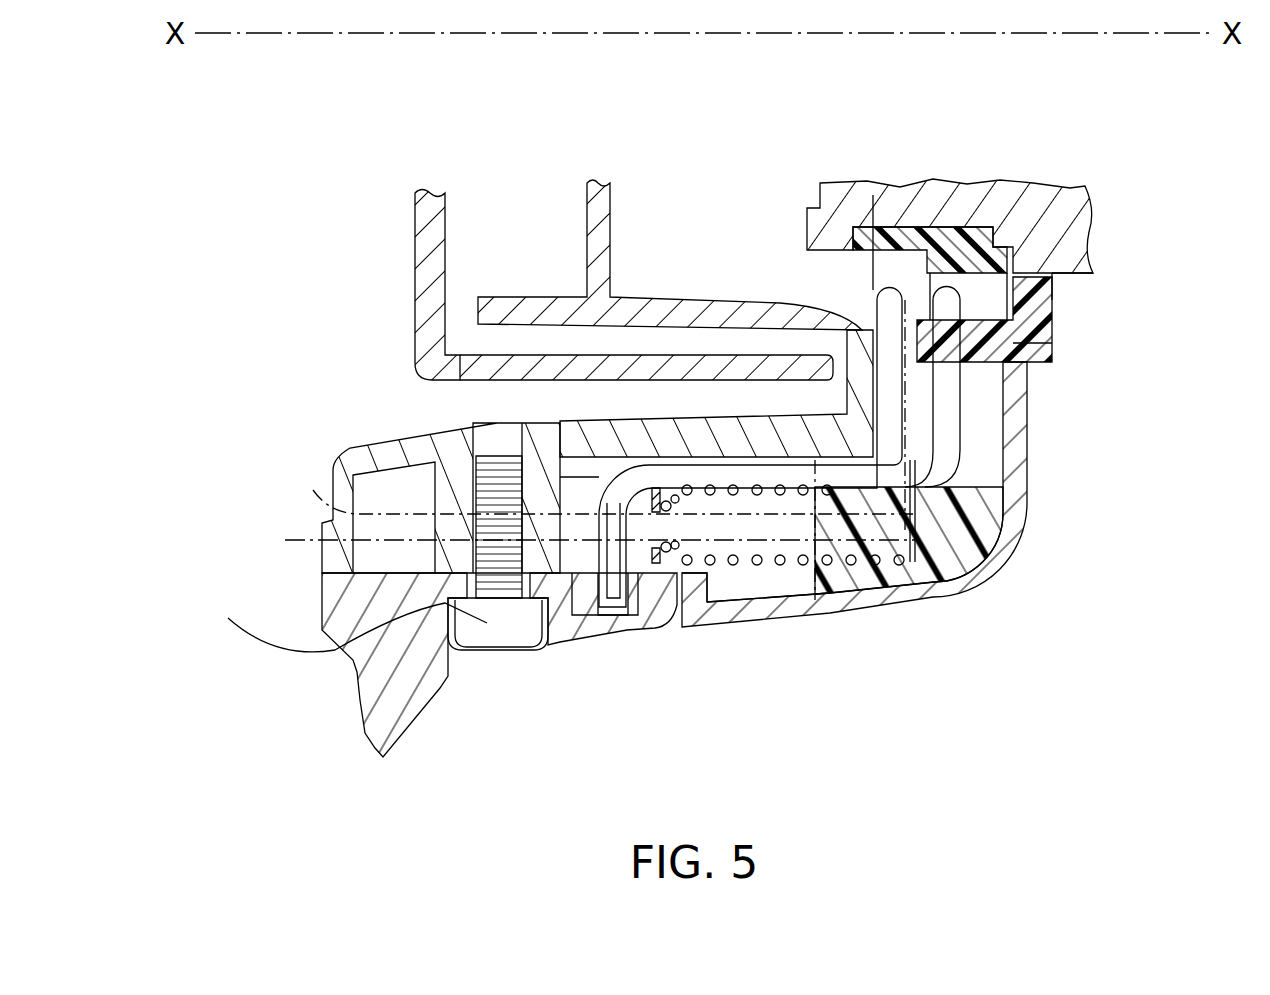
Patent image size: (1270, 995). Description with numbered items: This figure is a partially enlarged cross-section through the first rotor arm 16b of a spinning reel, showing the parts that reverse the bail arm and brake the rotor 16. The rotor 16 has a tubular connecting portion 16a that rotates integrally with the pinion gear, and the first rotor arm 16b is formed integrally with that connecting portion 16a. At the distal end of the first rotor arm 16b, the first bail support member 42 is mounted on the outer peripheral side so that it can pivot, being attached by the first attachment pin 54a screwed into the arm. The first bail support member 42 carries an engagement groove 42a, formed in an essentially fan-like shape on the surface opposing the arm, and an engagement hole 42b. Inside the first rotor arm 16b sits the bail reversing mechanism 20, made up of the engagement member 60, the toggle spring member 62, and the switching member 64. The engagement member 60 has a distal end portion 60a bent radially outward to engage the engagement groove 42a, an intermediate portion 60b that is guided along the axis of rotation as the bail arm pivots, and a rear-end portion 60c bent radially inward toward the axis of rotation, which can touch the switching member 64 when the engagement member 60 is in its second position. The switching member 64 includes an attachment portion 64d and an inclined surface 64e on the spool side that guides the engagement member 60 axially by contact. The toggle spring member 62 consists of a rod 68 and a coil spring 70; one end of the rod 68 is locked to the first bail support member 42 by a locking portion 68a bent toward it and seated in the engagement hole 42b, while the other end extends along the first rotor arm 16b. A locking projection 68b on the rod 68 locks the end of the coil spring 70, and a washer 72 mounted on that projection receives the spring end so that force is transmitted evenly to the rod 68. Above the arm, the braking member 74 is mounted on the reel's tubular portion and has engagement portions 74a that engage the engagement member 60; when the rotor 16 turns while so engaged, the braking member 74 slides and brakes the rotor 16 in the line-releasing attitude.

The rotor 16 is at (648, 262).
The tubular connecting portion 16a is at (697, 297).
The first rotor arm 16b is at (568, 423).
The bail reversing mechanism 20 is at (751, 606).
The first bail support member 42 is at (436, 740).
The engagement groove 42a is at (573, 593).
The engagement hole 42b is at (561, 541).
The first attachment pin 54a is at (323, 620).
The engagement member 60 is at (990, 430).
The distal end portion 60a is at (614, 605).
The intermediate portion 60b is at (730, 470).
The rear-end portion 60c is at (950, 390).
The toggle spring member 62 is at (817, 578).
The switching member 64 is at (1060, 313).
The attachment portion 64d is at (1060, 333).
The inclined surface 64e is at (873, 195).
The rod 68 is at (718, 564).
The locking portion 68a is at (340, 523).
The locking projection 68b is at (640, 505).
The coil spring 70 is at (797, 588).
The washer 72 is at (470, 540).
The braking member 74 is at (935, 222).
The engagement portion 74a is at (1050, 290).